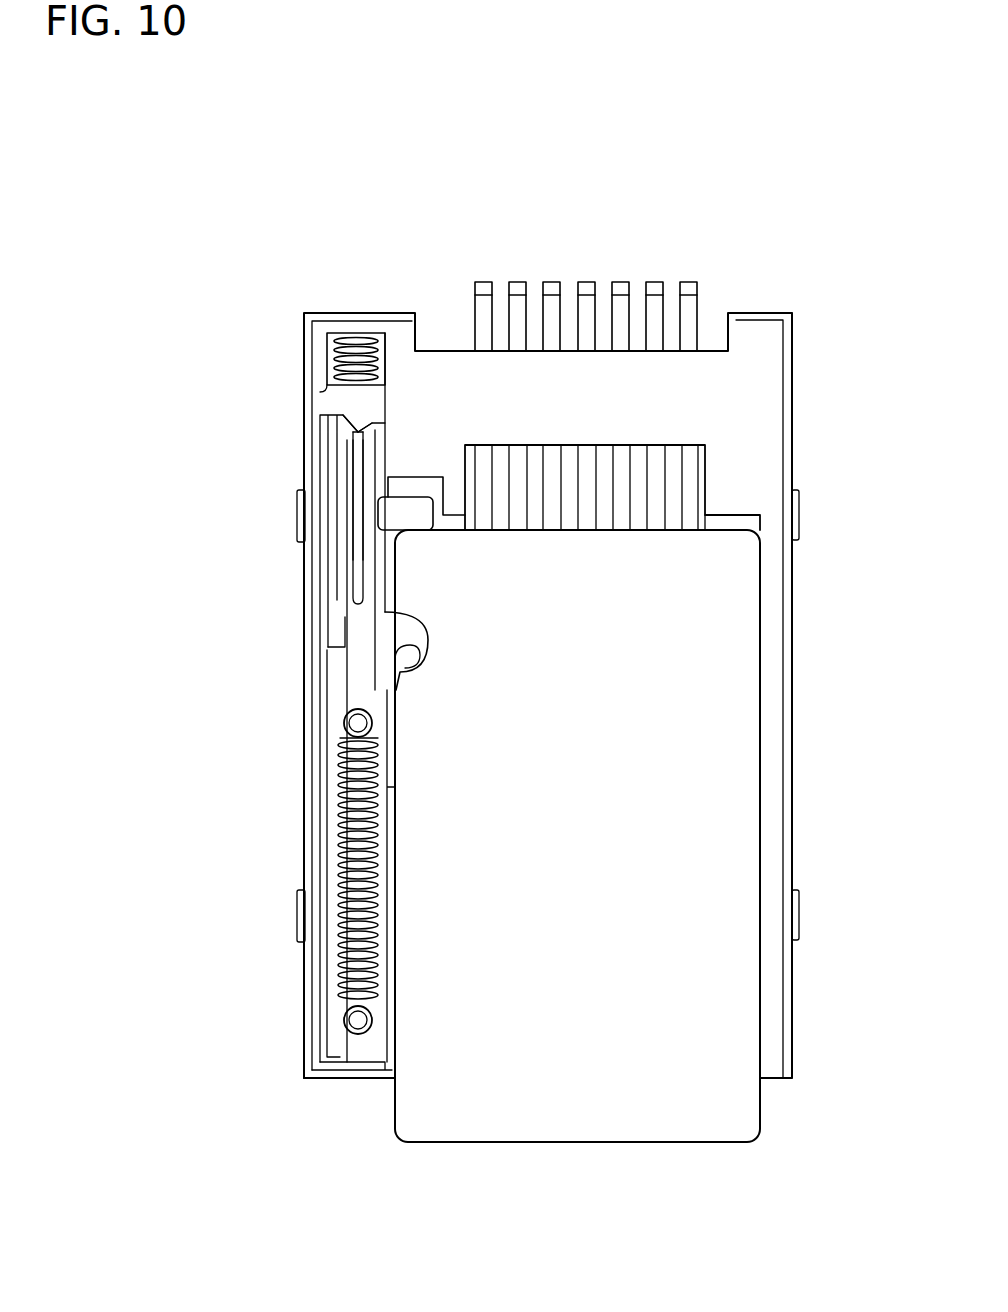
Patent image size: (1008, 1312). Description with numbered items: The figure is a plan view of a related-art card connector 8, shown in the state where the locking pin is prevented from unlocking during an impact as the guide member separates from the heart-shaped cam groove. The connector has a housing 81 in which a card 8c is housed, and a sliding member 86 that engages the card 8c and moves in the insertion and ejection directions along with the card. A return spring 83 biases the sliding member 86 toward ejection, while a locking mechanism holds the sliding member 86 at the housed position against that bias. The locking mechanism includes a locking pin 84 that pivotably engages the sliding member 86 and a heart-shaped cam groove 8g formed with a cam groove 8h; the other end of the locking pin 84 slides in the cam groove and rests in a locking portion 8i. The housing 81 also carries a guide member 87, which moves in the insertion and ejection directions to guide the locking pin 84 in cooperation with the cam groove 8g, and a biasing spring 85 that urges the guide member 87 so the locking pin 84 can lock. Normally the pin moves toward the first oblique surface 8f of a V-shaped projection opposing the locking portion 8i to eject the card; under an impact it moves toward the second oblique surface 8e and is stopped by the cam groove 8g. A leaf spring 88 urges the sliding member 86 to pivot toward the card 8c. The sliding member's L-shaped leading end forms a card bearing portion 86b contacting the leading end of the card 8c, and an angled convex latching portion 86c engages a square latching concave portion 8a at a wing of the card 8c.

The card connector 8 is at (853, 596).
The square latching concave portion 8a is at (428, 680).
The card 8c is at (440, 1143).
The second oblique surface 8e is at (373, 428).
The first oblique surface 8f is at (348, 428).
The heart-shaped cam groove 8g is at (183, 425).
The cam groove 8h is at (350, 447).
The locking portion 8i is at (350, 450).
The housing 81 is at (754, 307).
The return spring 83 is at (340, 905).
The locking pin 84 is at (355, 440).
The biasing spring 85 is at (328, 350).
The sliding member 86 is at (338, 653).
The card bearing portion 86b is at (416, 530).
The convex latching portion 86c is at (428, 633).
The guide member 87 is at (334, 1064).
The leaf spring 88 is at (380, 736).